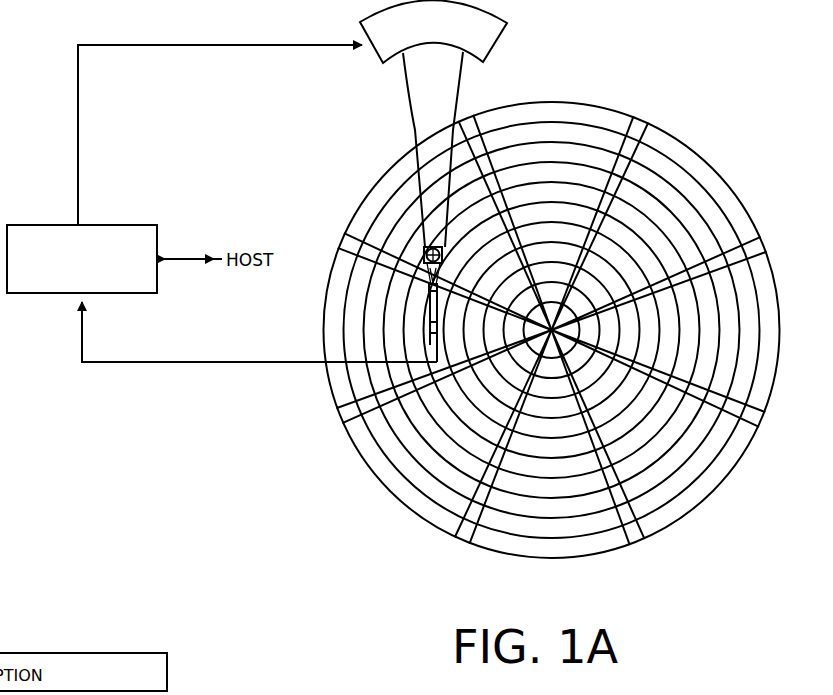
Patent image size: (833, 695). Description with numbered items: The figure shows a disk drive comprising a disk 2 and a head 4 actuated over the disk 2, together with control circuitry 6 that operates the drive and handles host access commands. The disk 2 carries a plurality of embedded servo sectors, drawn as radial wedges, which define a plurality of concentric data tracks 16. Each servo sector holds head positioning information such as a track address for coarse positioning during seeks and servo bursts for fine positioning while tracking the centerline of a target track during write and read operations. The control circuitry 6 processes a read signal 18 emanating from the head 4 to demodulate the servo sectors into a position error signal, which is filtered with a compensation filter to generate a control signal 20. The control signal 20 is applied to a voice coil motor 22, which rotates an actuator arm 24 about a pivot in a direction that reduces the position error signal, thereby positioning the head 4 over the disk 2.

The disk 2 is at (558, 321).
The head 4 is at (425, 337).
The control circuitry 6 is at (121, 224).
The data tracks 16 is at (550, 135).
The read signal 18 is at (217, 365).
The control signal 20 is at (76, 121).
The voice coil motor 22 is at (383, 63).
The actuator arm 24 is at (416, 132).